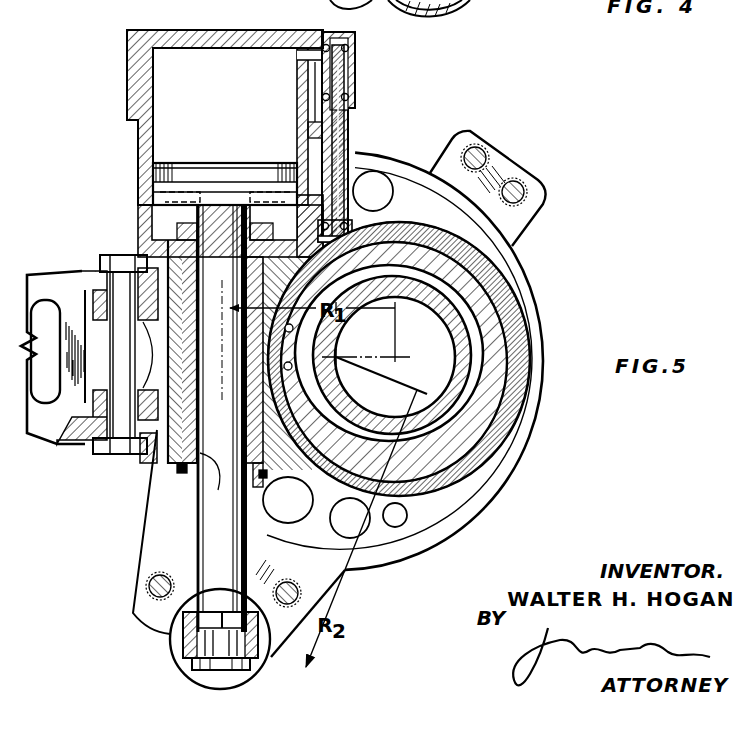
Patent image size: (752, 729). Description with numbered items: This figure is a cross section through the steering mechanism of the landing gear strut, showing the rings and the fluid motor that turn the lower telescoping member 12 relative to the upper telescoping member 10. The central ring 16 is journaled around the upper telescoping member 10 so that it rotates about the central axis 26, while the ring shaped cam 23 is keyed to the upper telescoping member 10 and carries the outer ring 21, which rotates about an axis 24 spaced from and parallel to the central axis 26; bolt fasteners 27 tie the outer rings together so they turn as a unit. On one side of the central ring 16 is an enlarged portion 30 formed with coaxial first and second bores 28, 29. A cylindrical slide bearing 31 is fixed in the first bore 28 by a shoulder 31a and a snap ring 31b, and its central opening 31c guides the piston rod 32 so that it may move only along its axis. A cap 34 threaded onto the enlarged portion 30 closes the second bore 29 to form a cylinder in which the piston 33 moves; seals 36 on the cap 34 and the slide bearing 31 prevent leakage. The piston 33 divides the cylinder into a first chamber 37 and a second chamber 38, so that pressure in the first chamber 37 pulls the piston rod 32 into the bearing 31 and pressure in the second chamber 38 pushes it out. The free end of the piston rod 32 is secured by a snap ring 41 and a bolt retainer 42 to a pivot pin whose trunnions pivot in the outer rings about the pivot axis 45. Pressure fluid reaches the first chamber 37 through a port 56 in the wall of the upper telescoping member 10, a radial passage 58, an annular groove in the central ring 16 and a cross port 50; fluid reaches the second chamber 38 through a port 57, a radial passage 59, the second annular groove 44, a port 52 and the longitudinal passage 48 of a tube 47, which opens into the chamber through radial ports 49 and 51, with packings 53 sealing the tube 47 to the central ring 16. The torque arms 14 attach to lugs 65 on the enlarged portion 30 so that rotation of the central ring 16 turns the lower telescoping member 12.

The upper telescoping member 10 is at (519, 408).
The lower telescoping member 12 is at (361, 422).
The torque arms 14 is at (52, 276).
The central ring 16 is at (480, 470).
The outer ring 21 is at (379, 552).
The ring shaped cam 23 is at (431, 503).
The axis 24 is at (338, 356).
The central axis 26 is at (397, 356).
The bolt fasteners 27 is at (514, 188).
The first bore 28 is at (287, 455).
The second bore 29 is at (140, 143).
The enlarged portion 30 is at (165, 455).
The cylindrical slide bearing 31 is at (200, 453).
The shoulder 31a is at (261, 240).
The snap ring 31b is at (180, 468).
The central opening 31c is at (220, 484).
The piston rod 32 is at (203, 566).
The piston 33 is at (221, 172).
The cap 34 is at (200, 30).
The seals 36 is at (133, 72).
The first chamber 37 is at (156, 223).
The second chamber 38 is at (234, 79).
The snap ring 41 is at (187, 630).
The bolt retainer 42 is at (195, 670).
The second annular groove 44 is at (440, 240).
The pivot axis 45 is at (215, 626).
The tube 47 is at (348, 122).
The longitudinal passage 48 is at (335, 145).
The radial port 49 is at (355, 66).
The cross port 50 is at (387, 362).
The radial port 51 is at (322, 48).
The port 52 is at (392, 240).
The packings 53 is at (355, 45).
The port 56 is at (276, 388).
The port 57 is at (284, 366).
The radial passage 58 is at (283, 370).
The radial passage 59 is at (285, 329).
The lugs 65 is at (68, 444).